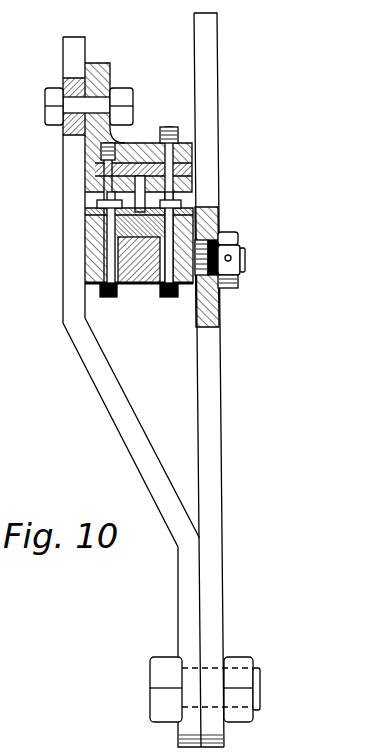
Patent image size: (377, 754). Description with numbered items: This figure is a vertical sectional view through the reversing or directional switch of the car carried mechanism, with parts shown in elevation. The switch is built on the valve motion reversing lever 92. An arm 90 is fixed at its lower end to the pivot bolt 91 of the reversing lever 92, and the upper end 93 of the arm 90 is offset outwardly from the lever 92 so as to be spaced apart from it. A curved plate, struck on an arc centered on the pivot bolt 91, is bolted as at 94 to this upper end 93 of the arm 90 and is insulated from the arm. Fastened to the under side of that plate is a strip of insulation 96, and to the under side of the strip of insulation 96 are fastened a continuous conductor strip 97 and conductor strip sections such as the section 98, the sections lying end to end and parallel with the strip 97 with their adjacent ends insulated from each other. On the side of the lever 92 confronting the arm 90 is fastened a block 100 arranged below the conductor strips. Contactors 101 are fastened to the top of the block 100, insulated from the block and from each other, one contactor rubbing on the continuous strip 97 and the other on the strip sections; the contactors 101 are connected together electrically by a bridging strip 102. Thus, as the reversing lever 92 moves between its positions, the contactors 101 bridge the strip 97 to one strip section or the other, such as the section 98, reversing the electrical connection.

The arm 90 is at (143, 465).
The pivot bolt 91 is at (157, 707).
The valve motion reversing lever 92 is at (223, 428).
The upper end of the arm 93 is at (72, 265).
The bolt 94 is at (113, 87).
The strip of insulation 96 is at (87, 173).
The continuous conductor strip 97 is at (87, 188).
The conductor strip section 98 is at (185, 183).
The block 100 is at (150, 285).
The contactors 101 is at (87, 209).
The bridging strip 102 is at (132, 290).